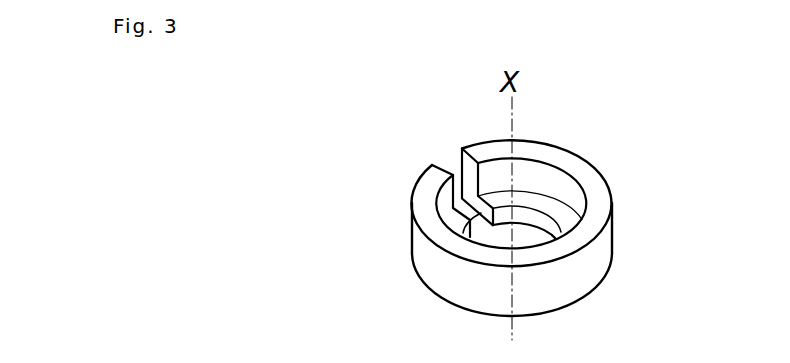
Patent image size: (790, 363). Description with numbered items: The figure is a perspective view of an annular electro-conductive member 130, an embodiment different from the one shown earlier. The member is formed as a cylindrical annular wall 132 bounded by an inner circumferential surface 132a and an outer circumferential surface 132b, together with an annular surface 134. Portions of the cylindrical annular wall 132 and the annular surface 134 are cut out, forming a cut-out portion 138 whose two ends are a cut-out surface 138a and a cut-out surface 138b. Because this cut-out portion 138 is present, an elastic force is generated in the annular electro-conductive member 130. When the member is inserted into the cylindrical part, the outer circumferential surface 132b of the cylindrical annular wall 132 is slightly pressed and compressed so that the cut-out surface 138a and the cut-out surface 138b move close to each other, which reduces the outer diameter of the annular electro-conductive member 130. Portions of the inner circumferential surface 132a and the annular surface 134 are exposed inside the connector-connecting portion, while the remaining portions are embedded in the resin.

The annular electro-conductive member 130 is at (634, 193).
The cylindrical annular wall 132 is at (599, 260).
The inner circumferential surface 132a is at (535, 174).
The outer circumferential surface 132b is at (567, 283).
The annular surface 134 is at (548, 208).
The cut-out portion 138 is at (447, 168).
The cut-out surface 138a is at (452, 170).
The cut-out surface 138b is at (446, 170).